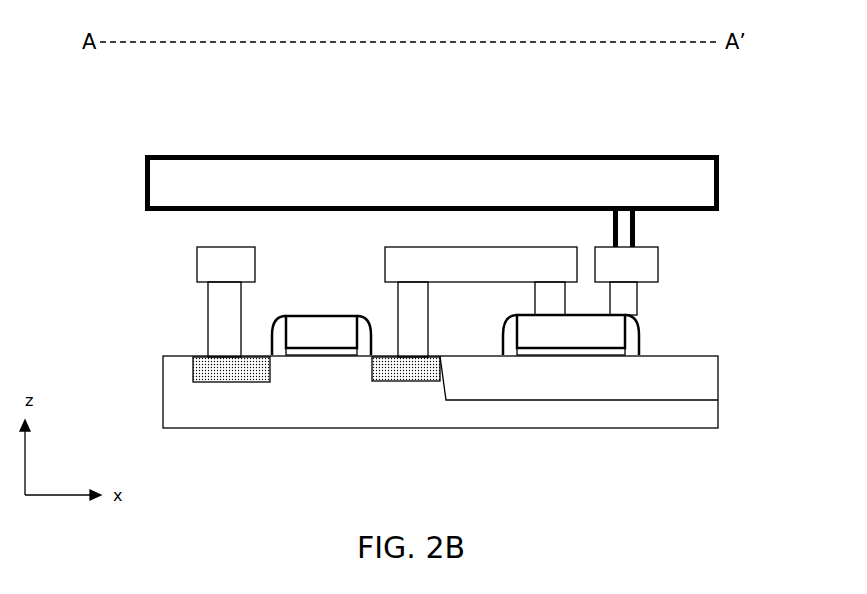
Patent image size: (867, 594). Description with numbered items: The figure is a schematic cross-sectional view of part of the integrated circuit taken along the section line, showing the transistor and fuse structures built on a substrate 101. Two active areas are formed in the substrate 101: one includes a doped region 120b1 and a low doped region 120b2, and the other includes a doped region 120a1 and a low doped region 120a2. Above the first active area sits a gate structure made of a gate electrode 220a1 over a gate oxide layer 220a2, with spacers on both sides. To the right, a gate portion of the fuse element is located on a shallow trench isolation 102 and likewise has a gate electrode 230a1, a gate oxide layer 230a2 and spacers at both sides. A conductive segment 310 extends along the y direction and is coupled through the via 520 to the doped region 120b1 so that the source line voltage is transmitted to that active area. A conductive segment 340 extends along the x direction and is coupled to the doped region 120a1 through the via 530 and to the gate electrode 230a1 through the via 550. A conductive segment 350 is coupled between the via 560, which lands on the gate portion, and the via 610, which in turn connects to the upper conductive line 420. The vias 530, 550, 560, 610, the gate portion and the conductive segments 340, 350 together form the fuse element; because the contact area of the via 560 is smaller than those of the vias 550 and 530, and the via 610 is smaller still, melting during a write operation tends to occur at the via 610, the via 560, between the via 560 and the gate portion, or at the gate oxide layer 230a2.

The substrate 101 is at (213, 419).
The shallow trench isolation 102 is at (579, 378).
The doped region 120a1 is at (406, 369).
The low doped region 120a2 is at (366, 358).
The doped region 120b1 is at (231, 369).
The low doped region 120b2 is at (274, 365).
The gate electrode 220a1 is at (321, 332).
The gate oxide layer 220a2 is at (315, 355).
The gate electrode 230a1 is at (571, 335).
The gate oxide layer 230a2 is at (637, 350).
The conductive segment 310 is at (226, 264).
The conductive segment 340 is at (481, 264).
The conductive segment 350 is at (626, 264).
The conductive line 420 is at (432, 183).
The via 520 is at (215, 322).
The via 530 is at (408, 298).
The via 550 is at (542, 302).
The via 560 is at (640, 300).
The via 610 is at (636, 222).